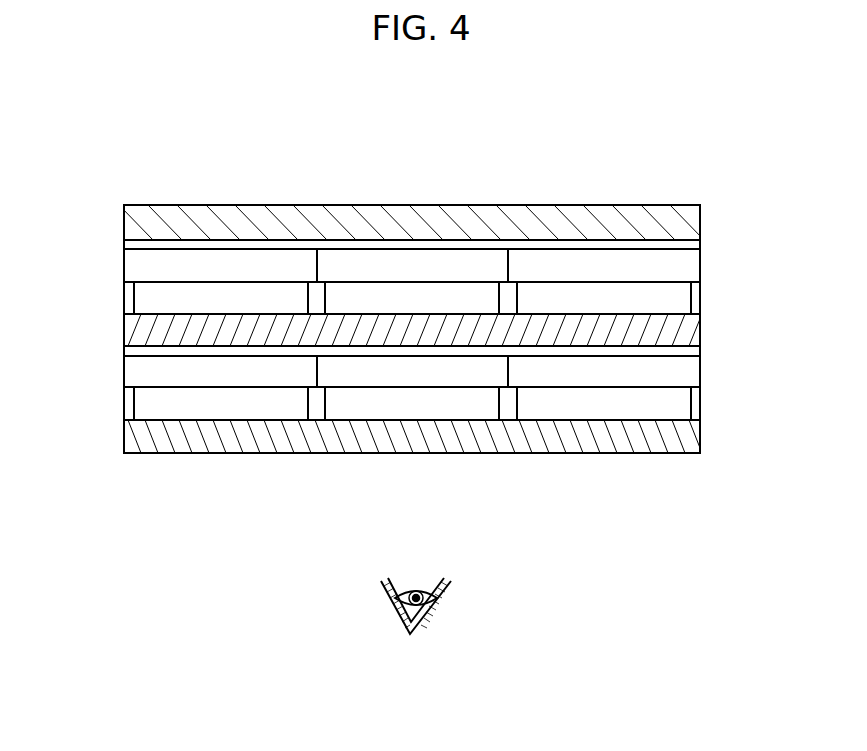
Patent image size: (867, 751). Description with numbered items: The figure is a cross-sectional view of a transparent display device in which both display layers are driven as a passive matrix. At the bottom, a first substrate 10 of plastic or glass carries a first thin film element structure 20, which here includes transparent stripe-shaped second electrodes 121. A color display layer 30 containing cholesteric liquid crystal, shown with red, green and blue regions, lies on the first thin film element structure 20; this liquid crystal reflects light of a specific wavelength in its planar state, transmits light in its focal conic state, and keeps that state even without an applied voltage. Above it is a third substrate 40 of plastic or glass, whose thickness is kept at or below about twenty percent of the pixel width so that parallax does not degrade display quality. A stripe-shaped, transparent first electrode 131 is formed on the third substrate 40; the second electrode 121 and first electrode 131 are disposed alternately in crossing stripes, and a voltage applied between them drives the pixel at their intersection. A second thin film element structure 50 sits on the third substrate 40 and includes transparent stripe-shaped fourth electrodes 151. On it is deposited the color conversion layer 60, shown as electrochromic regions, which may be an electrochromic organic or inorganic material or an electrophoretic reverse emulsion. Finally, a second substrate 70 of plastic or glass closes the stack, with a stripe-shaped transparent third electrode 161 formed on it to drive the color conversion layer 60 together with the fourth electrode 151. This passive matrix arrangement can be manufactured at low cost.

The first substrate 10 is at (688, 436).
The first thin film element structure 20 is at (705, 387).
The color display layer 30 is at (688, 372).
The third substrate 40 is at (688, 330).
The second thin film element structure 50 is at (705, 282).
The color conversion layer 60 is at (688, 263).
The second substrate 70 is at (688, 222).
The second electrode 121 is at (222, 404).
The first electrode 131 is at (127, 352).
The fourth electrode 151 is at (264, 297).
The third electrode 161 is at (127, 246).